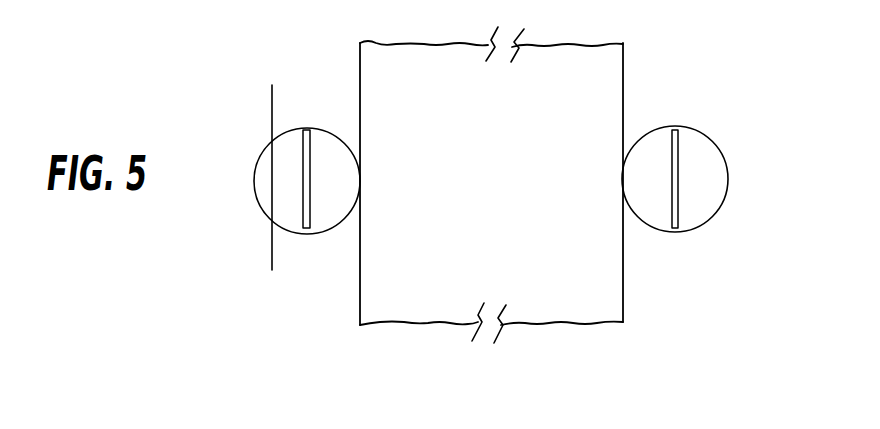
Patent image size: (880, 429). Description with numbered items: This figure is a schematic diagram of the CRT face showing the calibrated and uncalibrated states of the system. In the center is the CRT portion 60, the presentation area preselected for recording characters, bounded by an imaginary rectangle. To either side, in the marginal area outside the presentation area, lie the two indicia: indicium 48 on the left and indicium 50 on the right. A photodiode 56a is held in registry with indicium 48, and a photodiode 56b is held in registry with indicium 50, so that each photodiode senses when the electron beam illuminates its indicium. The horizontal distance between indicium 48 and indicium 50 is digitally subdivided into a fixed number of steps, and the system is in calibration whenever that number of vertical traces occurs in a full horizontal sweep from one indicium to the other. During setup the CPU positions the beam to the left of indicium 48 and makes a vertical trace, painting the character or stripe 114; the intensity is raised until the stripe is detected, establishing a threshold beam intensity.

The CRT portion 60 is at (498, 184).
The character (stripe) 114 is at (271, 112).
The photodiode 56a is at (264, 207).
The photodiode 56b is at (713, 200).
The indicium 48 is at (311, 143).
The indicium 50 is at (678, 146).